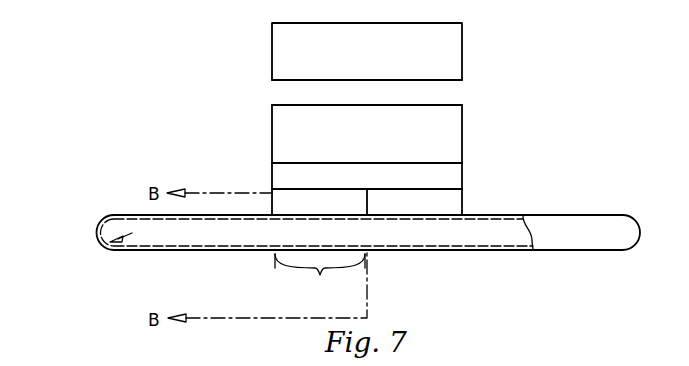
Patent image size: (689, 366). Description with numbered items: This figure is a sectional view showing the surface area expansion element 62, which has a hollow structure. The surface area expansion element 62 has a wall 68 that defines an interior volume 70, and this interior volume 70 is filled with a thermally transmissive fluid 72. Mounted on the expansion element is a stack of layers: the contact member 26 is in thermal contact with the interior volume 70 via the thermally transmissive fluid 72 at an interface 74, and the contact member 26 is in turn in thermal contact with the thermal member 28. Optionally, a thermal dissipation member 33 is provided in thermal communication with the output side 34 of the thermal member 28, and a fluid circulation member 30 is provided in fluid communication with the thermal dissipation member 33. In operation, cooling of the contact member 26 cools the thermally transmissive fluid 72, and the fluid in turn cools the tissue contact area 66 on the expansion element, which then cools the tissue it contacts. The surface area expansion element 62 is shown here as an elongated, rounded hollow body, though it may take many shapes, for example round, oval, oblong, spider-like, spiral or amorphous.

The contact member 26 is at (462, 200).
The thermal member 28 is at (462, 173).
The fluid circulation member 30 is at (462, 92).
The thermal dissipation member 33 is at (272, 116).
The output side 34 is at (462, 145).
The surface area expansion element 62 is at (603, 213).
The tissue contact area 66 is at (320, 280).
The wall 68 is at (97, 231).
The interior volume 70 is at (102, 247).
The thermally transmissive fluid 72 is at (172, 244).
The interface 74 is at (443, 216).